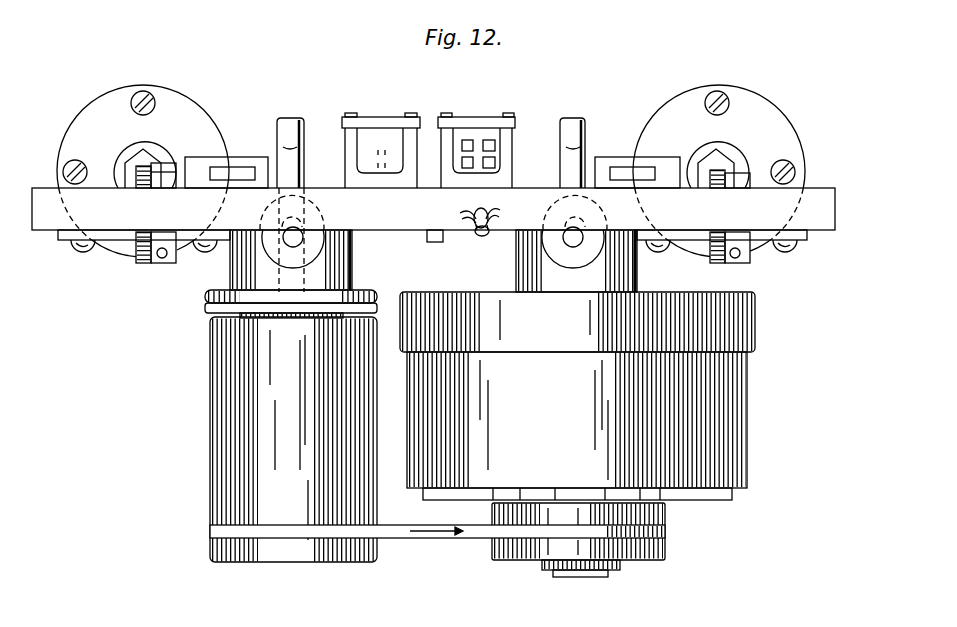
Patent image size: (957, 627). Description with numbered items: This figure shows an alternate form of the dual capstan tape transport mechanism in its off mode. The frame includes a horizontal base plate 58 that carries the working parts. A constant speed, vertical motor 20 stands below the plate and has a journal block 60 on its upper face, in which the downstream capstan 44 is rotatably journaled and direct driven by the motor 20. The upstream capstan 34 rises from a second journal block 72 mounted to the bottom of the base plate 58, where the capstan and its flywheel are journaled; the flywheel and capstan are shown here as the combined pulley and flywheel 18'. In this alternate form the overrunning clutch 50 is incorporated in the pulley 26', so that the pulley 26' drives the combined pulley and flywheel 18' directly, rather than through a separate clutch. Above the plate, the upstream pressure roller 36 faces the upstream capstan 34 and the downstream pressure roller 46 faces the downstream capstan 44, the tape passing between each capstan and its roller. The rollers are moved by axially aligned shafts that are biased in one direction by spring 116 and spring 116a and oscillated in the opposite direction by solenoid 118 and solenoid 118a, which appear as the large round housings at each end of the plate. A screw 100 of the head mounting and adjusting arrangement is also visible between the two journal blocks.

The solenoid 118 is at (97, 98).
The solenoid 118a is at (773, 105).
The upstream capstan 34 is at (302, 122).
The downstream capstan 44 is at (584, 123).
The base plate 58 is at (48, 222).
The spring 116 is at (136, 256).
The spring 116a is at (710, 257).
The upstream pressure roller 36 is at (318, 242).
The downstream pressure roller 46 is at (555, 238).
The journal block 72 is at (342, 263).
The journal block 60 is at (523, 270).
The screw 100 is at (470, 237).
The motor 20 is at (570, 334).
The cylinder 18' is at (293, 439).
The overrunning clutch 50 is at (523, 565).
The pulley 26' is at (479, 554).